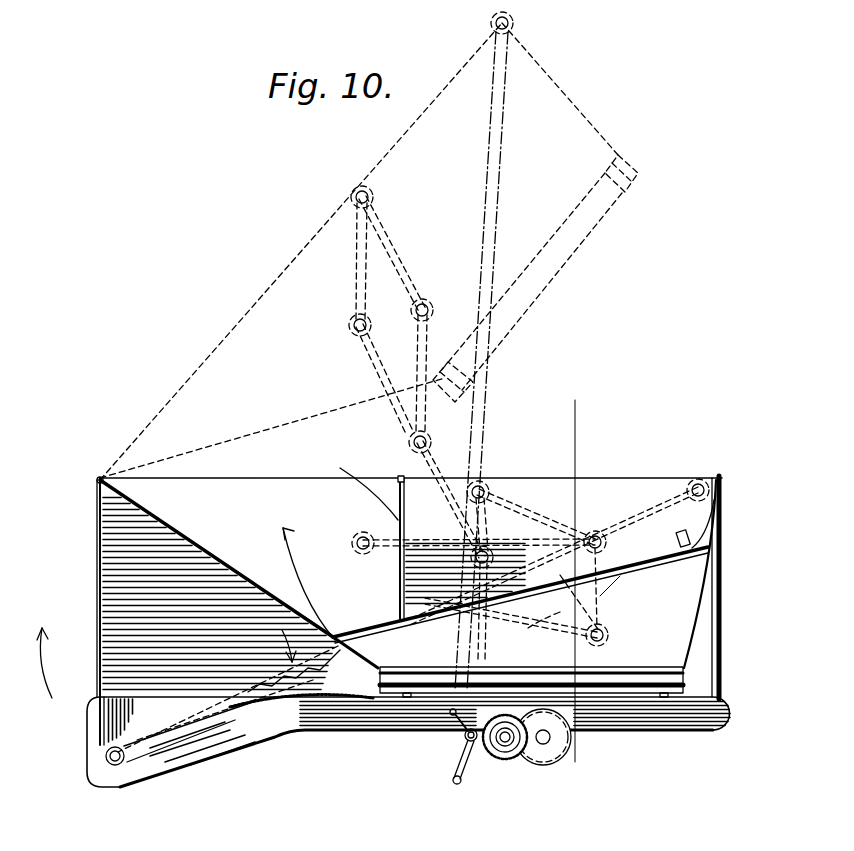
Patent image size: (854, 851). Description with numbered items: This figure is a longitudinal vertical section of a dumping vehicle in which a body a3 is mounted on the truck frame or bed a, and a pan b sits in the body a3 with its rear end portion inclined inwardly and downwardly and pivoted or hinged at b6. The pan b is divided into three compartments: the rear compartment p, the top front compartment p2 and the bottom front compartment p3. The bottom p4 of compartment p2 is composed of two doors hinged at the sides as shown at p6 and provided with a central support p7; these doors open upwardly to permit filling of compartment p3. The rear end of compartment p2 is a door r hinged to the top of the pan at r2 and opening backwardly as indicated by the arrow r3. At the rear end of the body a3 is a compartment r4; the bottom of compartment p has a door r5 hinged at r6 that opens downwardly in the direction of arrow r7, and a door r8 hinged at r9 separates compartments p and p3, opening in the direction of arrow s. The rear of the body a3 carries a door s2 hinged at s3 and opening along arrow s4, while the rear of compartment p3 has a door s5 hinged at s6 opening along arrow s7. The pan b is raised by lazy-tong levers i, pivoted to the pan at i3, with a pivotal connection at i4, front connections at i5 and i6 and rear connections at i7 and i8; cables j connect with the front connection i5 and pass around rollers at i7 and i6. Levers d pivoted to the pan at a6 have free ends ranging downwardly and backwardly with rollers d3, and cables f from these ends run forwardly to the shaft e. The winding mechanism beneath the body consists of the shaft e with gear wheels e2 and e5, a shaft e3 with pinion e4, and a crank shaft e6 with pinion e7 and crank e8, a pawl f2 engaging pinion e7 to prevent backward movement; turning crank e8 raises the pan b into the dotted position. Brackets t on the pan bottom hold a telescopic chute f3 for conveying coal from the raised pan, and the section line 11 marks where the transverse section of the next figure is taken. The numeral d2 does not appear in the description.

The truck frame or bed a is at (733, 716).
The body a3 is at (724, 600).
The pivot of levers d a6 is at (509, 24).
The pan b is at (665, 478).
The pivot or hinge of pan b6 is at (100, 476).
The lever d is at (484, 370).
The lever pivot d2 is at (110, 764).
The roller d3 is at (120, 766).
The transverse shaft e is at (543, 745).
The gear wheel e2 is at (575, 742).
The transverse shaft e3 is at (505, 748).
The pinion e4 is at (520, 756).
The gear wheel e5 is at (490, 755).
The crank shaft e6 is at (466, 740).
The pinion e7 is at (462, 755).
The crank e8 is at (453, 784).
The cable f is at (237, 706).
The pawl f2 is at (443, 717).
The telescopic chute f3 is at (528, 305).
The lazy-tong lever i is at (390, 252).
The pivotal connection to pan i3 is at (483, 486).
The pivotal connection i4 is at (370, 193).
The front pivotal connection i5 is at (522, 418).
The rear pivotal connection i6 is at (604, 640).
The rear pivotal connection i7 is at (352, 328).
The rear pivotal connection i8 is at (301, 709).
The cable j is at (537, 631).
The rear compartment p is at (484, 566).
The top front compartment p2 is at (554, 555).
The bottom front compartment p3 is at (612, 603).
The bottom of compartment p2 p4 is at (720, 520).
The hinge of doors p6 is at (714, 492).
The central support p7 is at (609, 590).
The door r is at (361, 482).
The hinge of door r r2 is at (396, 470).
The arrow r3 is at (320, 535).
The compartment r4 is at (200, 584).
The door r5 is at (296, 625).
The hinge of door r5 r6 is at (330, 582).
The arrow r7 is at (271, 645).
The door r8 is at (365, 660).
The hinge of door r8 r9 is at (418, 640).
The arrow s is at (229, 699).
The door s2 is at (135, 660).
The hinge of door s2 s3 is at (138, 587).
The arrow s4 is at (48, 675).
The door s5 is at (340, 653).
The hinge of door s5 s6 is at (363, 657).
The arrow s7 is at (280, 700).
The bracket t is at (632, 190).
The section line 11 is at (579, 581).